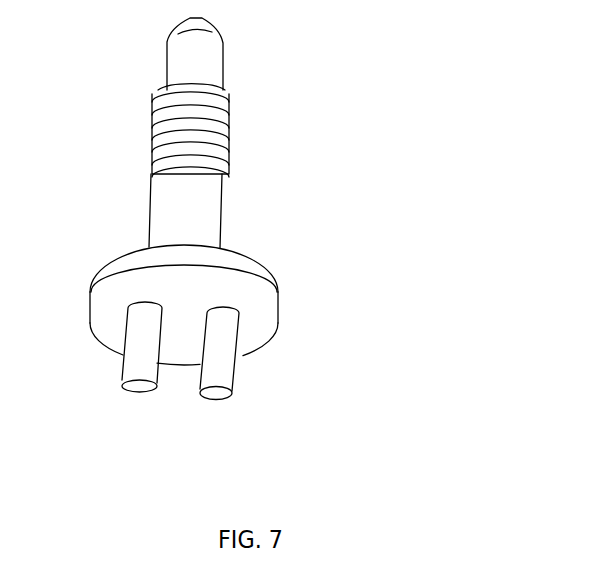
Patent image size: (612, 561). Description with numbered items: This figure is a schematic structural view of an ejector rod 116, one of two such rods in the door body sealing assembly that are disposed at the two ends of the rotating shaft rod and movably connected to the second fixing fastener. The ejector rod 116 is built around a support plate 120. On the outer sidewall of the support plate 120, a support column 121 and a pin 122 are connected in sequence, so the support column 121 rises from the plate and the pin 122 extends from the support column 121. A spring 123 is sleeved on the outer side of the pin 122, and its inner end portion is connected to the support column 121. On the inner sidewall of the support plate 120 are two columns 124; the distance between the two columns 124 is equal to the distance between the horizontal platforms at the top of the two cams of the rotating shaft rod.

The ejector rod 116 is at (178, 407).
The support plate 120 is at (272, 288).
The support column 121 is at (207, 223).
The pin 122 is at (203, 67).
The spring 123 is at (230, 100).
The columns 124 is at (223, 370).